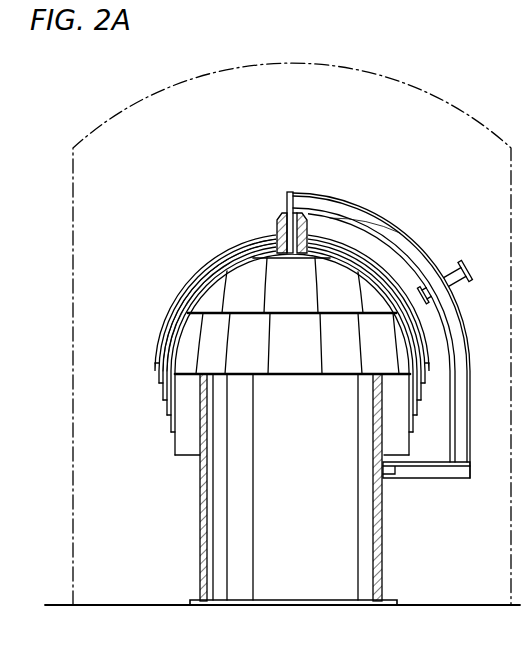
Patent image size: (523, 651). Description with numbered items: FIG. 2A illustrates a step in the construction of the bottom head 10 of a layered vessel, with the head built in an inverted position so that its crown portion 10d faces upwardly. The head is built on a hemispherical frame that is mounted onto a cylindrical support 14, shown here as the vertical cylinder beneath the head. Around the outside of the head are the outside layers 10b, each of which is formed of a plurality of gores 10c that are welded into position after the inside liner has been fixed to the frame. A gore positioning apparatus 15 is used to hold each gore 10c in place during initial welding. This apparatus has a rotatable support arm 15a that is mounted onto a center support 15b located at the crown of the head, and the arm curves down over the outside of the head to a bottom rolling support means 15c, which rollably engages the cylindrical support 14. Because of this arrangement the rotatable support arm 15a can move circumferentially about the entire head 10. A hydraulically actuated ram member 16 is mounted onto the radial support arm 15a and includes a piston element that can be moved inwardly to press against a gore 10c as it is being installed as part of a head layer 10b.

The bottom head 10 is at (168, 332).
The outside layer 10b is at (232, 253).
The gore 10c is at (209, 298).
The crown portion 10d is at (262, 233).
The cylindrical support 14 is at (200, 540).
The gore positioning apparatus 15 is at (357, 197).
The rotatable support arm 15a is at (398, 230).
The center support 15b is at (282, 216).
The bottom rolling support means 15c is at (418, 480).
The hydraulically actuated ram member 16 is at (448, 264).